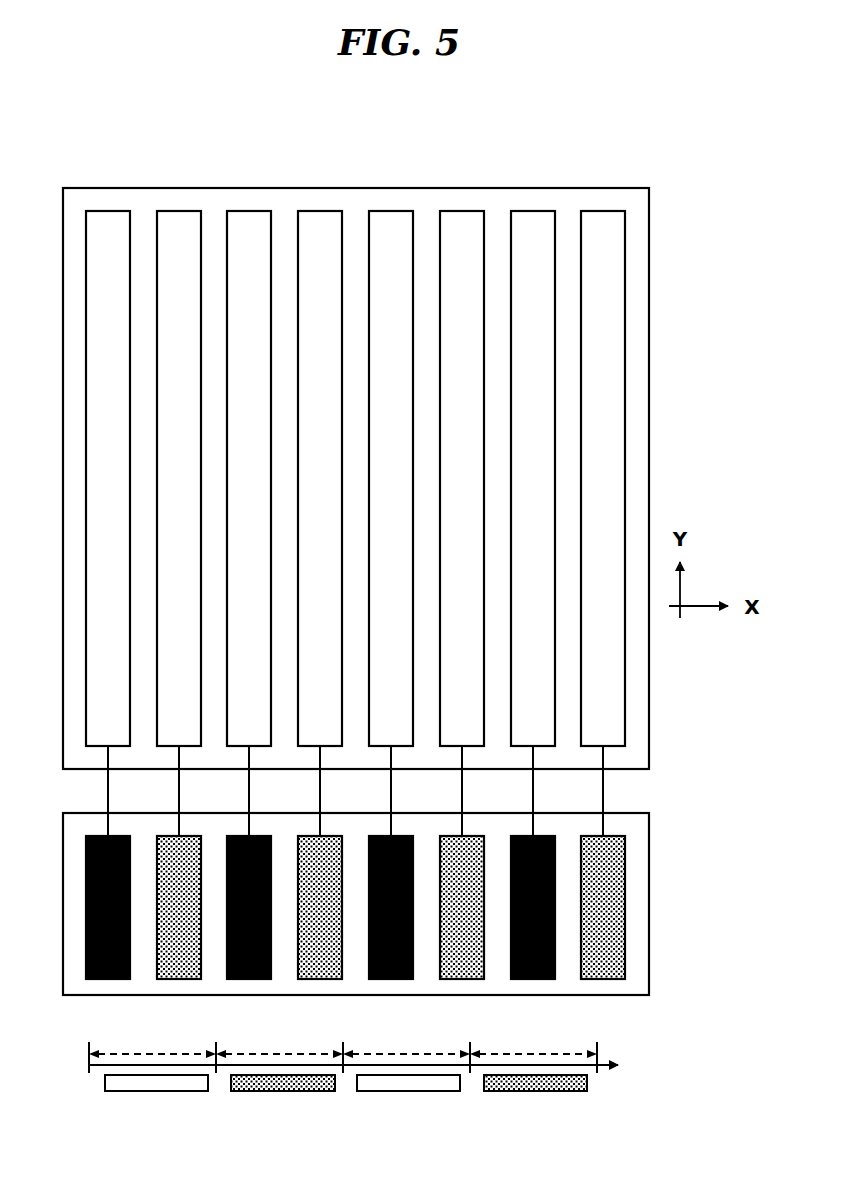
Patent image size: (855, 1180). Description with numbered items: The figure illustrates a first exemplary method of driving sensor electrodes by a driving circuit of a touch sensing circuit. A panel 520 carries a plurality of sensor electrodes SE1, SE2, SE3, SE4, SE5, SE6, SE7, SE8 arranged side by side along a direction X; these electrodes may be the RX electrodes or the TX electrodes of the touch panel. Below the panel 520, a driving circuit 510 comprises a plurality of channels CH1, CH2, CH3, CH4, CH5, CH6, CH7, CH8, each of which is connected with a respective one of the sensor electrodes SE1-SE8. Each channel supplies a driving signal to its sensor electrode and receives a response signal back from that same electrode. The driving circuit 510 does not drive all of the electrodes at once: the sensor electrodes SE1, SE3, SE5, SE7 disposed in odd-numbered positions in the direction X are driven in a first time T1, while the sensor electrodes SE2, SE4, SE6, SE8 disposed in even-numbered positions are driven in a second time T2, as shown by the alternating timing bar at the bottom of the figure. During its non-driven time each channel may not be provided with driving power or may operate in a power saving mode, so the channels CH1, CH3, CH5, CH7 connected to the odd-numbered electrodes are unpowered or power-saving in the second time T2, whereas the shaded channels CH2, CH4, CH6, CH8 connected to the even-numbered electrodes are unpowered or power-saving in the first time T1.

The driving circuit 510 is at (649, 940).
The panel 520 is at (649, 700).
The sensor electrode SE1 is at (104, 211).
The sensor electrode SE2 is at (175, 211).
The sensor electrode SE3 is at (245, 211).
The sensor electrode SE4 is at (316, 211).
The sensor electrode SE5 is at (387, 211).
The sensor electrode SE6 is at (458, 211).
The sensor electrode SE7 is at (529, 211).
The sensor electrode SE8 is at (599, 211).
The channel CH1 is at (108, 907).
The channel CH2 is at (179, 907).
The channel CH3 is at (249, 907).
The channel CH4 is at (320, 907).
The channel CH5 is at (391, 907).
The channel CH6 is at (462, 907).
The channel CH7 is at (533, 907).
The channel CH8 is at (603, 907).
The first time T1 is at (282, 1057).
The second time T2 is at (409, 1057).